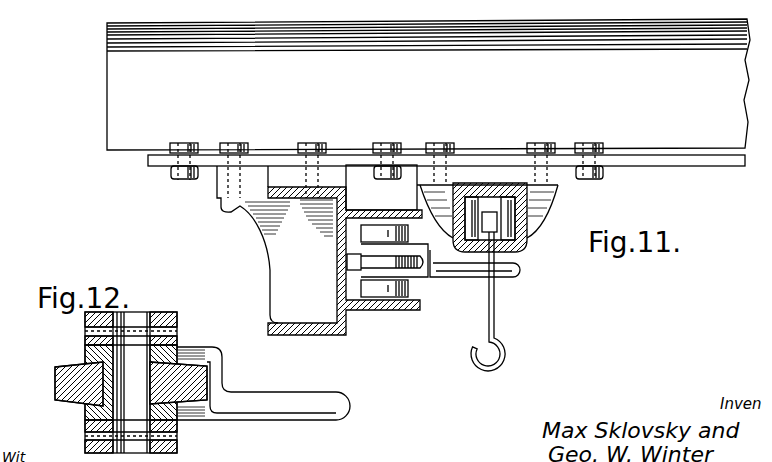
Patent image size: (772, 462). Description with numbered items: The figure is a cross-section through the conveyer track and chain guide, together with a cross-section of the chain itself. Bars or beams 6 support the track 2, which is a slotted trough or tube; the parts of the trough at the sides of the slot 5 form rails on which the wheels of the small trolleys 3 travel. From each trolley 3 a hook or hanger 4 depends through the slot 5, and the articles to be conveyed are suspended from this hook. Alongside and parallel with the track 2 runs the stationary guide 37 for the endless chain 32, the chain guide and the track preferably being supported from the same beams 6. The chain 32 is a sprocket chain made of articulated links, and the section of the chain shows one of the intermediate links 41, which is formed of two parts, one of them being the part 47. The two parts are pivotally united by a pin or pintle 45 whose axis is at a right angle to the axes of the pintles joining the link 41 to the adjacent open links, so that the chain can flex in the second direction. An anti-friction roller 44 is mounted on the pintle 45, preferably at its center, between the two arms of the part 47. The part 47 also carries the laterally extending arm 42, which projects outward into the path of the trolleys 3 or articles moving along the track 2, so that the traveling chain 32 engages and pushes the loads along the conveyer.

In FIG. 11, the bars or beams 6 is at (428, 84).
In FIG. 11, the track 2 is at (528, 230).
In FIG. 11, the trolleys 3 is at (512, 213).
In FIG. 11, the endless chain 32 is at (489, 212).
In FIG. 11, the slot 5 is at (496, 253).
In FIG. 11, the hooks or hangers 4 is at (494, 327).
In FIG. 11, the link 41 is at (404, 273).
In FIG. 12, the link 41 is at (111, 382).
In FIG. 11, the laterally extending arm 42 is at (463, 278).
In FIG. 12, the laterally extending arm 42 is at (278, 418).
In FIG. 11, the anti-friction roller 44 is at (346, 262).
In FIG. 12, the anti-friction roller 44 is at (55, 385).
In FIG. 11, the stationary guide 37 is at (350, 310).
In FIG. 12, the pin or pintle 45 is at (131, 382).
In FIG. 12, the link part 47 is at (192, 421).